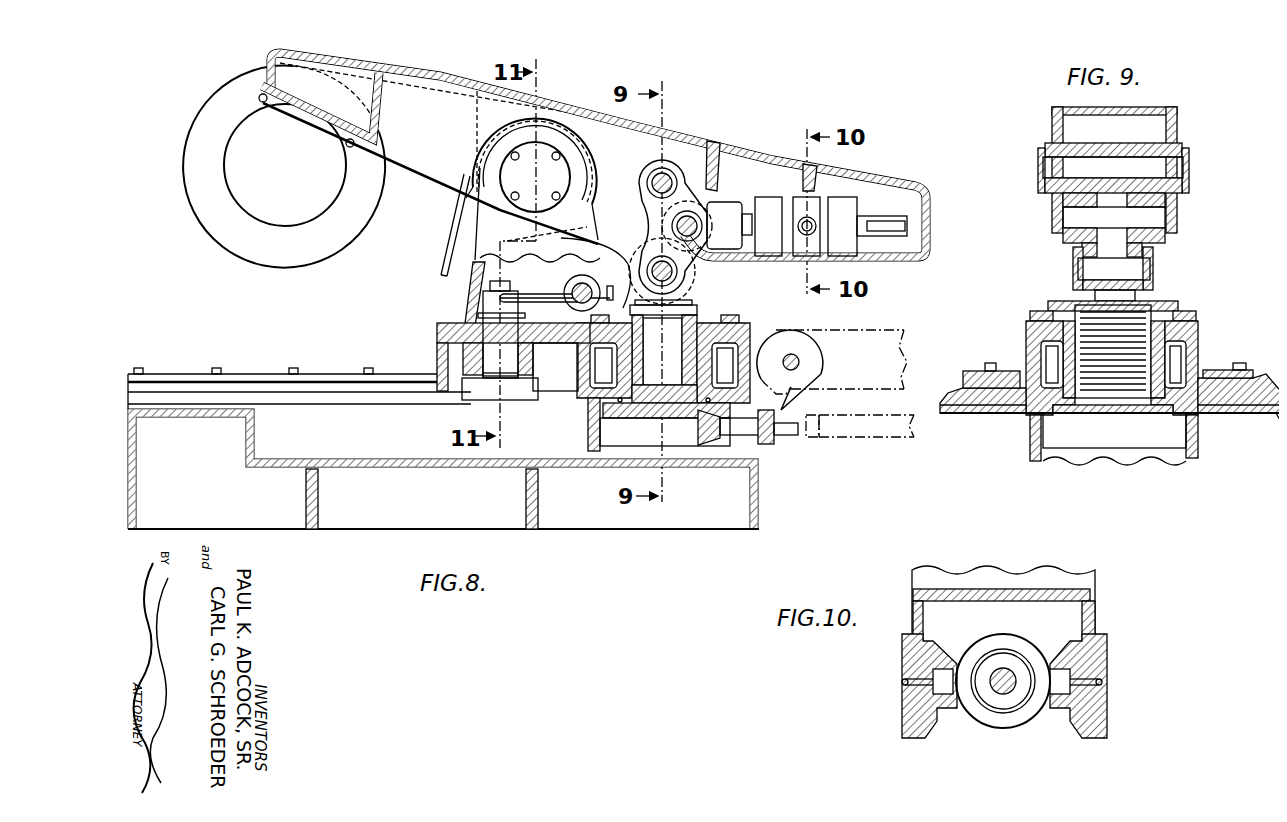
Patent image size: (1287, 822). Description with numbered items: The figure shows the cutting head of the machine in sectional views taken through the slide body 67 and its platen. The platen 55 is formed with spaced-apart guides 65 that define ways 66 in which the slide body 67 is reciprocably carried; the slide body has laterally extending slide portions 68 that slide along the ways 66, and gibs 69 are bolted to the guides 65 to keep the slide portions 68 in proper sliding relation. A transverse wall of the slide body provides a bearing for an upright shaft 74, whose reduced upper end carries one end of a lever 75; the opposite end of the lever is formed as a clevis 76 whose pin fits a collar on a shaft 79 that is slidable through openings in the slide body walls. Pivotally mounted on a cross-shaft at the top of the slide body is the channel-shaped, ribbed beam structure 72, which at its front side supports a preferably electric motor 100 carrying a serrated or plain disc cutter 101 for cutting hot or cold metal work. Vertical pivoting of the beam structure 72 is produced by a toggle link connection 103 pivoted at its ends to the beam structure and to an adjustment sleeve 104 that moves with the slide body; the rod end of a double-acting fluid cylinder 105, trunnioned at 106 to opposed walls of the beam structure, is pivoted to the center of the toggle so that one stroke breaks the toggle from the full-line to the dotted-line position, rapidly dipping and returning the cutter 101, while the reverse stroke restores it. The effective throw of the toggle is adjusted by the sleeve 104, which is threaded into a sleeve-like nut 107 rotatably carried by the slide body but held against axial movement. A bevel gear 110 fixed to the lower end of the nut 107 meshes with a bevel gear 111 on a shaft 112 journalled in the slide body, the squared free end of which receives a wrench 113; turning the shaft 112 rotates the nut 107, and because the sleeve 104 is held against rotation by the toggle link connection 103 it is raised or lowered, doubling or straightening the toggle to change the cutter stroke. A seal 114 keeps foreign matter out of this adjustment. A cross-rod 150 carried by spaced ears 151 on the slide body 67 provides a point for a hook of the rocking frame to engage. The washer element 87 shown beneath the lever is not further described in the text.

In FIG. 8, the platen 55 is at (333, 523).
In FIG. 9, the platen 55 is at (1270, 410).
In FIG. 9, the guides 65 is at (948, 384).
In FIG. 9, the ways 66 is at (970, 404).
In FIG. 8, the slide body 67 is at (450, 296).
In FIG. 9, the slide body 67 is at (1197, 339).
In FIG. 9, the slide portions 68 is at (1005, 387).
In FIG. 8, the gibs 69 is at (240, 370).
In FIG. 9, the gibs 69 is at (962, 363).
In FIG. 8, the beam structure 72 is at (690, 119).
In FIG. 9, the beam structure 72 is at (1171, 102).
In FIG. 10, the beam structure 72 is at (1092, 603).
In FIG. 8, the upright shaft 74 is at (490, 339).
In FIG. 8, the lever 75 is at (504, 290).
In FIG. 8, the clevis 76 is at (585, 270).
In FIG. 8, the shaft 79 is at (571, 296).
In FIG. 8, the washer plate 87 is at (463, 386).
In FIG. 8, the motor 100 is at (225, 149).
In FIG. 8, the disc cutter 101 is at (216, 218).
In FIG. 8, the toggle link connection 103 is at (682, 205).
In FIG. 9, the toggle link connection 103 is at (1160, 240).
In FIG. 8, the adjustment sleeve 104 is at (692, 306).
In FIG. 9, the adjustment sleeve 104 is at (1052, 292).
In FIG. 8, the fluid cylinder 105 is at (838, 197).
In FIG. 10, the fluid cylinder 105 is at (997, 712).
In FIG. 8, the trunnions 106 is at (806, 224).
In FIG. 10, the trunnions 106 is at (935, 675).
In FIG. 8, the sleeve-like nut 107 is at (742, 325).
In FIG. 9, the sleeve-like nut 107 is at (1150, 348).
In FIG. 8, the bevel gear 110 is at (613, 410).
In FIG. 9, the bevel gear 110 is at (1062, 406).
In FIG. 8, the bevel gear 111 is at (701, 438).
In FIG. 8, the shaft 112 is at (746, 425).
In FIG. 8, the wrench 113 is at (865, 422).
In FIG. 8, the seal 114 is at (697, 303).
In FIG. 9, the seal 114 is at (1160, 292).
In FIG. 8, the cross-rod 150 is at (789, 350).
In FIG. 8, the ears 151 is at (808, 352).